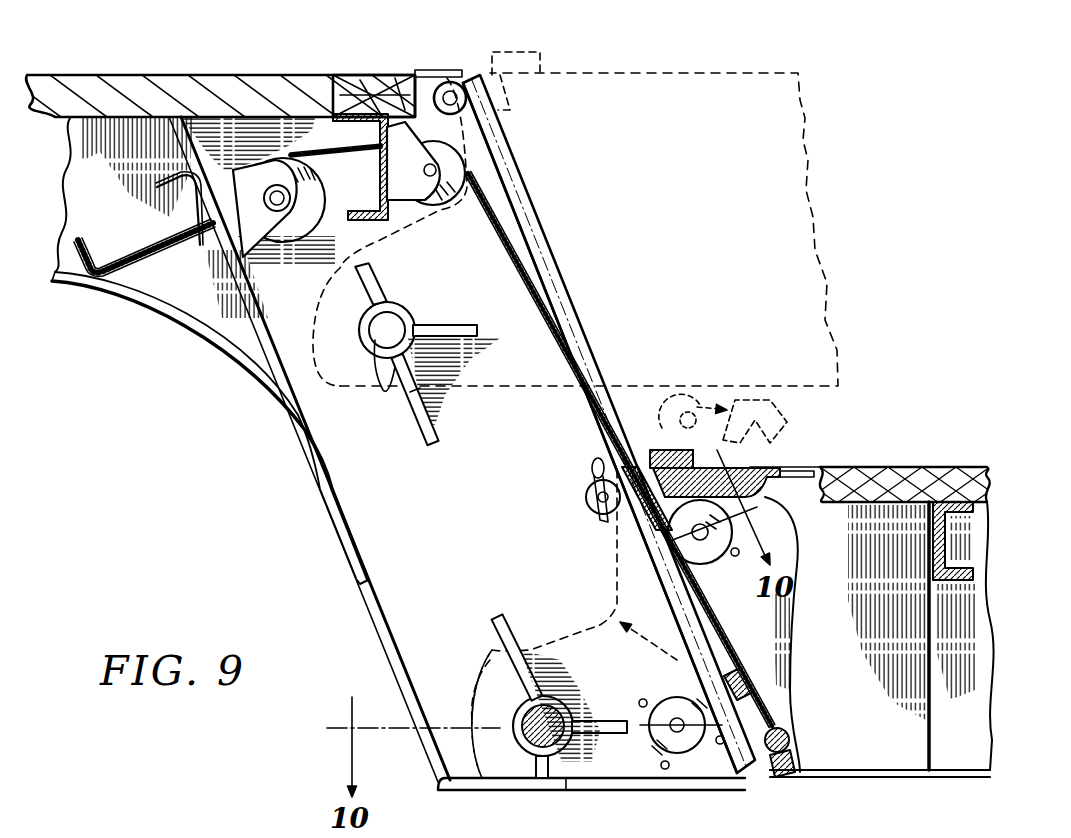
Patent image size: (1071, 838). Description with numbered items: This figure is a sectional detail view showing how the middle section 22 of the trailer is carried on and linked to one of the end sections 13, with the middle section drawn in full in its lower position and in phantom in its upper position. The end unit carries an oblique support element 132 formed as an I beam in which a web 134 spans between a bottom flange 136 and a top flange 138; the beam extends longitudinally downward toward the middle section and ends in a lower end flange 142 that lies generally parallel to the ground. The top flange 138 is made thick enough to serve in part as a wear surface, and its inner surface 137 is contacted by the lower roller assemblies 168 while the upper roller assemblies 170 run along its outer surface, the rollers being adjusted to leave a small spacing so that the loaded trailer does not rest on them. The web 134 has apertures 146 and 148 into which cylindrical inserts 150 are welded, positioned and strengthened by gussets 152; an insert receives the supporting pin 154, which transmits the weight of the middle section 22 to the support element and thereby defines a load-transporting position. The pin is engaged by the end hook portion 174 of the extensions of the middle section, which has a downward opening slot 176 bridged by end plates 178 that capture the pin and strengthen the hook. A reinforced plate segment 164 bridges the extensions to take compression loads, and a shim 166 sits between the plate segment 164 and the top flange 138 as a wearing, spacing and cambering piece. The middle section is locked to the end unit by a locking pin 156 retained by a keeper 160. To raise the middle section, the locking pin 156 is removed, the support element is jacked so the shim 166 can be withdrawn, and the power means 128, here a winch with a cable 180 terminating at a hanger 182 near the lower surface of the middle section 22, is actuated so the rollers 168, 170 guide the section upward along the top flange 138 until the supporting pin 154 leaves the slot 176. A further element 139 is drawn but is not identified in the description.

The end section 13 is at (333, 70).
The middle section 22 is at (840, 162).
The power means 128 is at (295, 268).
The oblique support element 132 is at (368, 634).
The web 134 is at (350, 532).
The bottom flange 136 is at (364, 598).
The inner surface 137 is at (490, 162).
The top flange 138 is at (582, 347).
The post inner edge 139 is at (577, 284).
The lower end flange 142 is at (499, 792).
The aperture 146 is at (416, 309).
The aperture 148 is at (509, 759).
The cylindrical insert 150 is at (388, 362).
The gusset 152 is at (423, 432).
The supporting pin 154 is at (549, 722).
The locking pin 156 is at (586, 497).
The keeper 160 is at (590, 460).
The plate segment 164 is at (762, 470).
The shim means 166 is at (528, 52).
The lower roller assembly 168 is at (689, 752).
The upper roller assembly 170 is at (706, 551).
The end hook portion 174 is at (483, 690).
The downward opening slot 176 is at (572, 792).
The end plate 178 is at (278, 160).
The cable 180 is at (490, 210).
The hanger 182 is at (791, 737).